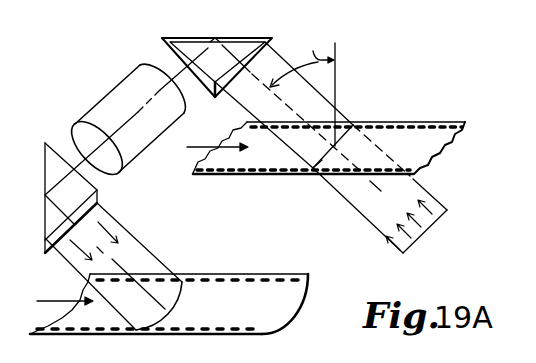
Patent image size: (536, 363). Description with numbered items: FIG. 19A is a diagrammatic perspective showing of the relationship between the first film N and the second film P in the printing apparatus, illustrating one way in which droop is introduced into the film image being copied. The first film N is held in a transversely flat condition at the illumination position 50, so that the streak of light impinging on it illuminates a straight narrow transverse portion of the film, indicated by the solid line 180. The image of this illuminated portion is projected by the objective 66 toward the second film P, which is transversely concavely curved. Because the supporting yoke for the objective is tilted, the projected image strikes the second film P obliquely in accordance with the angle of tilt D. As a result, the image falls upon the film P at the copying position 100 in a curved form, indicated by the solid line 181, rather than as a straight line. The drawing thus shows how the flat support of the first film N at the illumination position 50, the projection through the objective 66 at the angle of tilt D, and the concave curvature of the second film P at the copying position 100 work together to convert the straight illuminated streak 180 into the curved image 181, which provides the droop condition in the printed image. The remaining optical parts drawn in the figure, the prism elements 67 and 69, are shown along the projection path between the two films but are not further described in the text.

The reflecting prism 67 is at (193, 47).
The objective 66 is at (118, 97).
The prism 69 is at (47, 170).
The illumination position 50 is at (377, 118).
The solid line 180 is at (324, 166).
The copying position 100 is at (208, 272).
The solid line 181 is at (184, 301).
The angle of tilt D is at (302, 58).
The first film N is at (428, 131).
The second film P is at (287, 285).